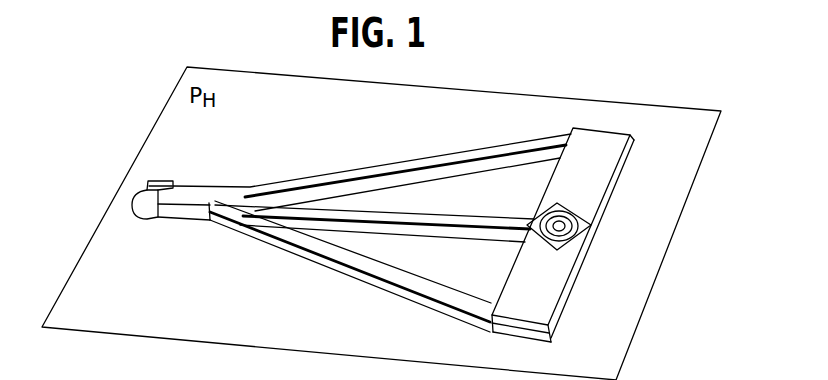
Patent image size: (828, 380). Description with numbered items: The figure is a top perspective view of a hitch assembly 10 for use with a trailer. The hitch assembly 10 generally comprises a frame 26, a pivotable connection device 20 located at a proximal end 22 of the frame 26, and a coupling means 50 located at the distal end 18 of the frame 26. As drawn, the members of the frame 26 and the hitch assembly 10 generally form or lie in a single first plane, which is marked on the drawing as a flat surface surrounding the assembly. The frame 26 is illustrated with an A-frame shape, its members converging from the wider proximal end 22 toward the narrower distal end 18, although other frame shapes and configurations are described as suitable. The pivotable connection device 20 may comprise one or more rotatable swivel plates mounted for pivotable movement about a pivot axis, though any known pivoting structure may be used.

The hitch assembly 10 is at (521, 115).
The distal end 18 is at (227, 202).
The pivotable connection device 20 is at (580, 200).
The proximal end 22 is at (547, 262).
The frame 26 is at (357, 143).
The coupling means 50 is at (142, 200).